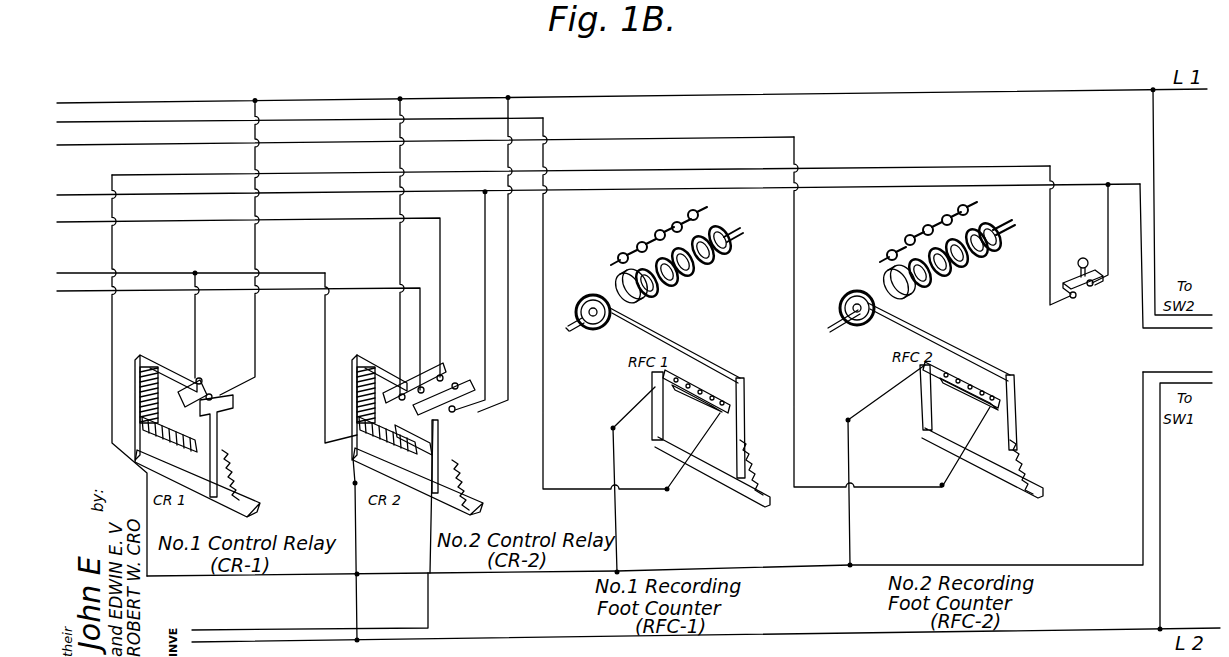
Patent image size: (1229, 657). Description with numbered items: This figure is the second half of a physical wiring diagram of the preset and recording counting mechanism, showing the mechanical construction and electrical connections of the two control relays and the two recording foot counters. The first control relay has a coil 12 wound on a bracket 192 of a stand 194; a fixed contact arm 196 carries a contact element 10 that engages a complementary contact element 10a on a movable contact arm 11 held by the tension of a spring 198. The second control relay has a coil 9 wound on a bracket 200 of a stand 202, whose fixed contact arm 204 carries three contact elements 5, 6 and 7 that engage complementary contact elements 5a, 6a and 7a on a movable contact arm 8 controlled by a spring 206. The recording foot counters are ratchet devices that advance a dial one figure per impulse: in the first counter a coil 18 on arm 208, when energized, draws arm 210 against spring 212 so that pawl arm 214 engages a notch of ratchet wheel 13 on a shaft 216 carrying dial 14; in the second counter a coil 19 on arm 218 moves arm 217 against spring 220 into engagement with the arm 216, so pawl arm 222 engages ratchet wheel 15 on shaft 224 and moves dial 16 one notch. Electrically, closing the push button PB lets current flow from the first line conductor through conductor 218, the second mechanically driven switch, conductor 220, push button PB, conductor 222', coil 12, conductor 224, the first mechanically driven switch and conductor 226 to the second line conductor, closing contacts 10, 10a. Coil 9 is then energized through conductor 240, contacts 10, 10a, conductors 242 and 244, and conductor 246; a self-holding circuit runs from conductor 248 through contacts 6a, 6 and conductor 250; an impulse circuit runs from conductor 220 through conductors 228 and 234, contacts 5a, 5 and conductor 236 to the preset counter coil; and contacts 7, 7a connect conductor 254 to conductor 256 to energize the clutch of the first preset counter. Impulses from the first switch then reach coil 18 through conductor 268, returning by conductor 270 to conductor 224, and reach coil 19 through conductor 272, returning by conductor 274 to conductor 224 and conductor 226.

The contact element 5 is at (445, 375).
The complementary contact element 5a is at (457, 383).
The contact element 6 is at (423, 387).
The complementary contact element 6a is at (458, 405).
The contact element 7 is at (404, 393).
The complementary contact element 7a is at (455, 412).
The movable contact arm 8 is at (455, 458).
The coil 9 is at (337, 455).
The contact element 10 is at (203, 378).
The complementary contact element 10a is at (212, 396).
The movable contact arm 11 is at (225, 440).
The coil 12 is at (133, 455).
The ratchet wheel 13 is at (590, 297).
The dial 14 is at (707, 284).
The ratchet wheel 15 is at (853, 296).
The dial 16 is at (995, 250).
The coil 18 is at (682, 395).
The coil 19 is at (985, 405).
The bracket 192 is at (113, 447).
The stand 194 is at (140, 400).
The fixed contact arm 196 is at (153, 353).
The spring 198 is at (240, 470).
The bracket 200 is at (440, 440).
The stand 202 is at (350, 372).
The fixed contact arm 204 is at (380, 362).
The spring 206 is at (465, 493).
The arm 208 is at (703, 385).
The arm 210 is at (744, 400).
The spring 212 is at (753, 462).
The pawl arm 214 is at (688, 347).
The shaft 216 is at (642, 308).
The arm 217 is at (1020, 408).
The arm; conductor 218 is at (1157, 232).
The spring; conductor 220 is at (1108, 228).
The pawl arm 222 is at (534, 375).
The conductor 222' is at (591, 215).
The shaft; conductor 224 is at (317, 577).
The conductor 226 is at (1162, 510).
The conductor 228 is at (827, 185).
The conductor 234 is at (483, 257).
The conductor 236 is at (367, 217).
The conductor 240 is at (252, 256).
The conductor 242 is at (197, 322).
The conductor 244 is at (300, 258).
The conductor 246 is at (357, 532).
The conductor 248 is at (507, 207).
The conductor 250 is at (82, 273).
The conductor 254 is at (397, 152).
The conductor 256 is at (430, 597).
The conductor 268 is at (113, 122).
The conductor 270 is at (618, 513).
The conductor 272 is at (205, 145).
The conductor 274 is at (850, 508).
The push button PB is at (1083, 287).